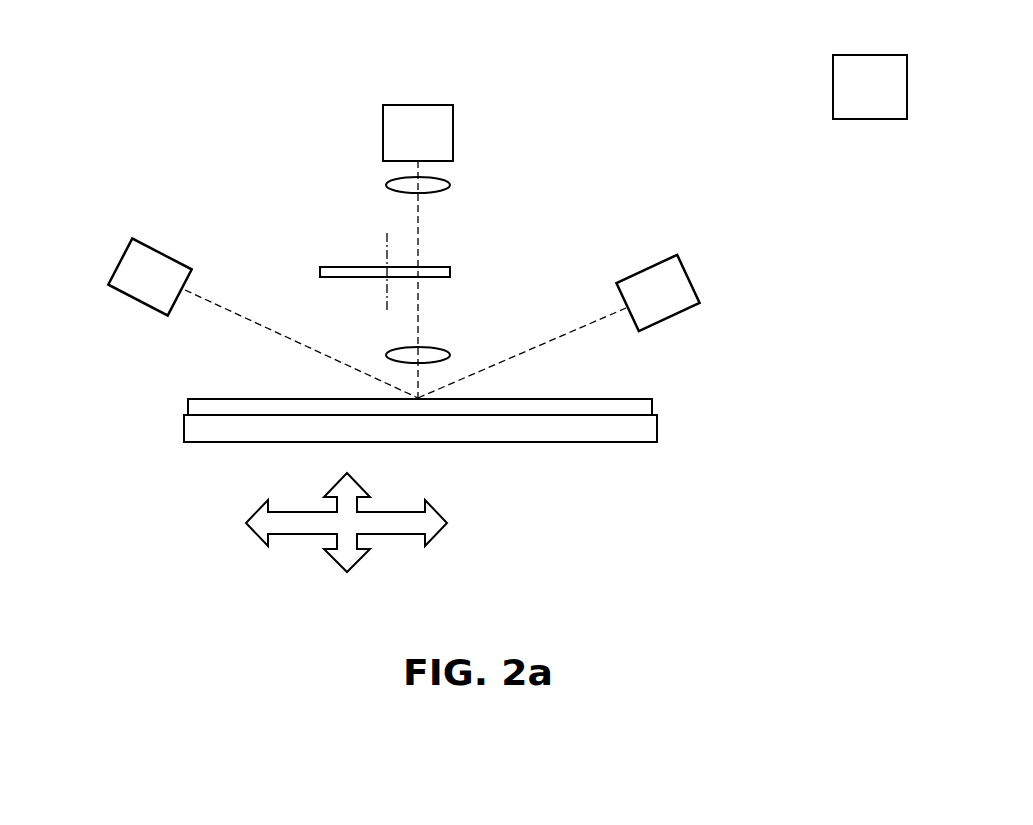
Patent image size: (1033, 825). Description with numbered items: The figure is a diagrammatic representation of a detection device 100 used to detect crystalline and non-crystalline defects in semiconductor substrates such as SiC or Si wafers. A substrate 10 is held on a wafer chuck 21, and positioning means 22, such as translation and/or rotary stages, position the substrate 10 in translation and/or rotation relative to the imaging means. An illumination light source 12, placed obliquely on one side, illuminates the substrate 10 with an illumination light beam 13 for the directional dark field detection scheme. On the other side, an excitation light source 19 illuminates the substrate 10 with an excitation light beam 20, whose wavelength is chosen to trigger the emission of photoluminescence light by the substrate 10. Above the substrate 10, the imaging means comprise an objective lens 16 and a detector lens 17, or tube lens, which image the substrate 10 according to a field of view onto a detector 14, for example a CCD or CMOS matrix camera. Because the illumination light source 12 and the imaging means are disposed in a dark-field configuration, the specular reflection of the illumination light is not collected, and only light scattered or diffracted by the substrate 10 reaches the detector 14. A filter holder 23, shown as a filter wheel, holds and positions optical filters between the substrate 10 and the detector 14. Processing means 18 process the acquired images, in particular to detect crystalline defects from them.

The detection device 100 is at (163, 84).
The substrate 10 is at (188, 407).
The illumination light source 12 is at (118, 262).
The illumination light beam 13 is at (208, 306).
The detector 14 is at (453, 133).
The objective lens 16 is at (448, 355).
The detector lens 17 is at (450, 185).
The processing means 18 is at (833, 85).
The excitation light source 19 is at (690, 278).
The excitation light beam 20 is at (545, 340).
The wafer chuck 21 is at (420, 442).
The positioning means 22 is at (240, 522).
The filter holder 23 is at (450, 272).